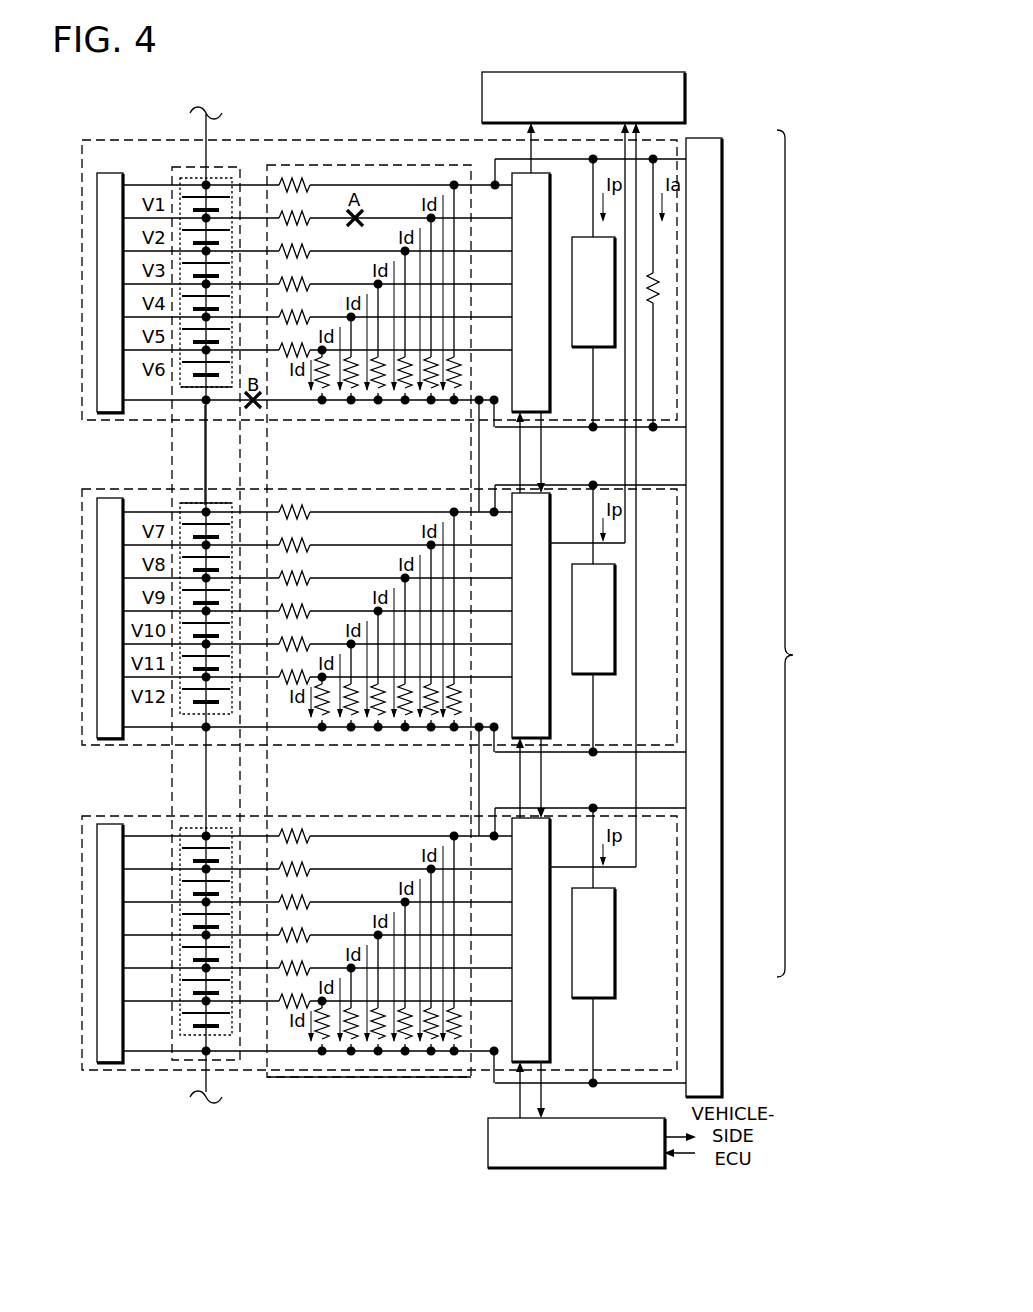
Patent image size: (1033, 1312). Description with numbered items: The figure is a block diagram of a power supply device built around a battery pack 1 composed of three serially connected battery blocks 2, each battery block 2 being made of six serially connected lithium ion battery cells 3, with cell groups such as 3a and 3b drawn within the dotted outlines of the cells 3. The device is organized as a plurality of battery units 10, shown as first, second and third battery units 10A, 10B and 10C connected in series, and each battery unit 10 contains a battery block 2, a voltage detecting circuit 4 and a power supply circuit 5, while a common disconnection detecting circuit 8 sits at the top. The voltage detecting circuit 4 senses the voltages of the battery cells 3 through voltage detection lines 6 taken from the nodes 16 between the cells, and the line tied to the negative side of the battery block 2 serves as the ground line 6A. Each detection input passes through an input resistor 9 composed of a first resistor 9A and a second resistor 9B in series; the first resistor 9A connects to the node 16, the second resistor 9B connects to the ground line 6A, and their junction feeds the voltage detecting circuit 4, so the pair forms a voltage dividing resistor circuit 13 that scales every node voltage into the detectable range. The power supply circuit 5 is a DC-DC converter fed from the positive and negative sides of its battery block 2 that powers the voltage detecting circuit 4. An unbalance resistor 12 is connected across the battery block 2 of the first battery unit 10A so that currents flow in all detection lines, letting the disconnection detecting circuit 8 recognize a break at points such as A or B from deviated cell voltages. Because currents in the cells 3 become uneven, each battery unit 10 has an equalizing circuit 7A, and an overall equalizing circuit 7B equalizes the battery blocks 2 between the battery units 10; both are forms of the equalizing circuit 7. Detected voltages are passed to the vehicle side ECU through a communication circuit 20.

The battery pack 1 is at (167, 1027).
The battery block 2 is at (196, 176).
The battery cell 3 is at (181, 196).
The first battery cell group 3a is at (188, 393).
The second battery cell group 3b is at (188, 520).
The voltage detecting circuit 4 is at (550, 185).
The power supply circuit 5 is at (575, 348).
The voltage detection line 6 is at (138, 477).
The ground line 6A is at (157, 402).
The equalizer 7 is at (420, 569).
The equalizing circuit 7A is at (99, 273).
The equalizing circuit 7B is at (722, 238).
The disconnection detecting circuit 8 is at (686, 117).
The input resistor 9 is at (465, 100).
The first resistor 9A is at (292, 185).
The second resistor 9B is at (462, 393).
The battery unit 10 is at (804, 553).
The first battery unit 10A is at (677, 352).
The second battery unit 10B is at (677, 698).
The third battery unit 10C is at (677, 948).
The unbalance resistor 12 is at (653, 304).
The voltage dividing resistor circuit 13 is at (425, 1080).
The node 16 is at (210, 220).
The communication circuit 20 is at (622, 1117).